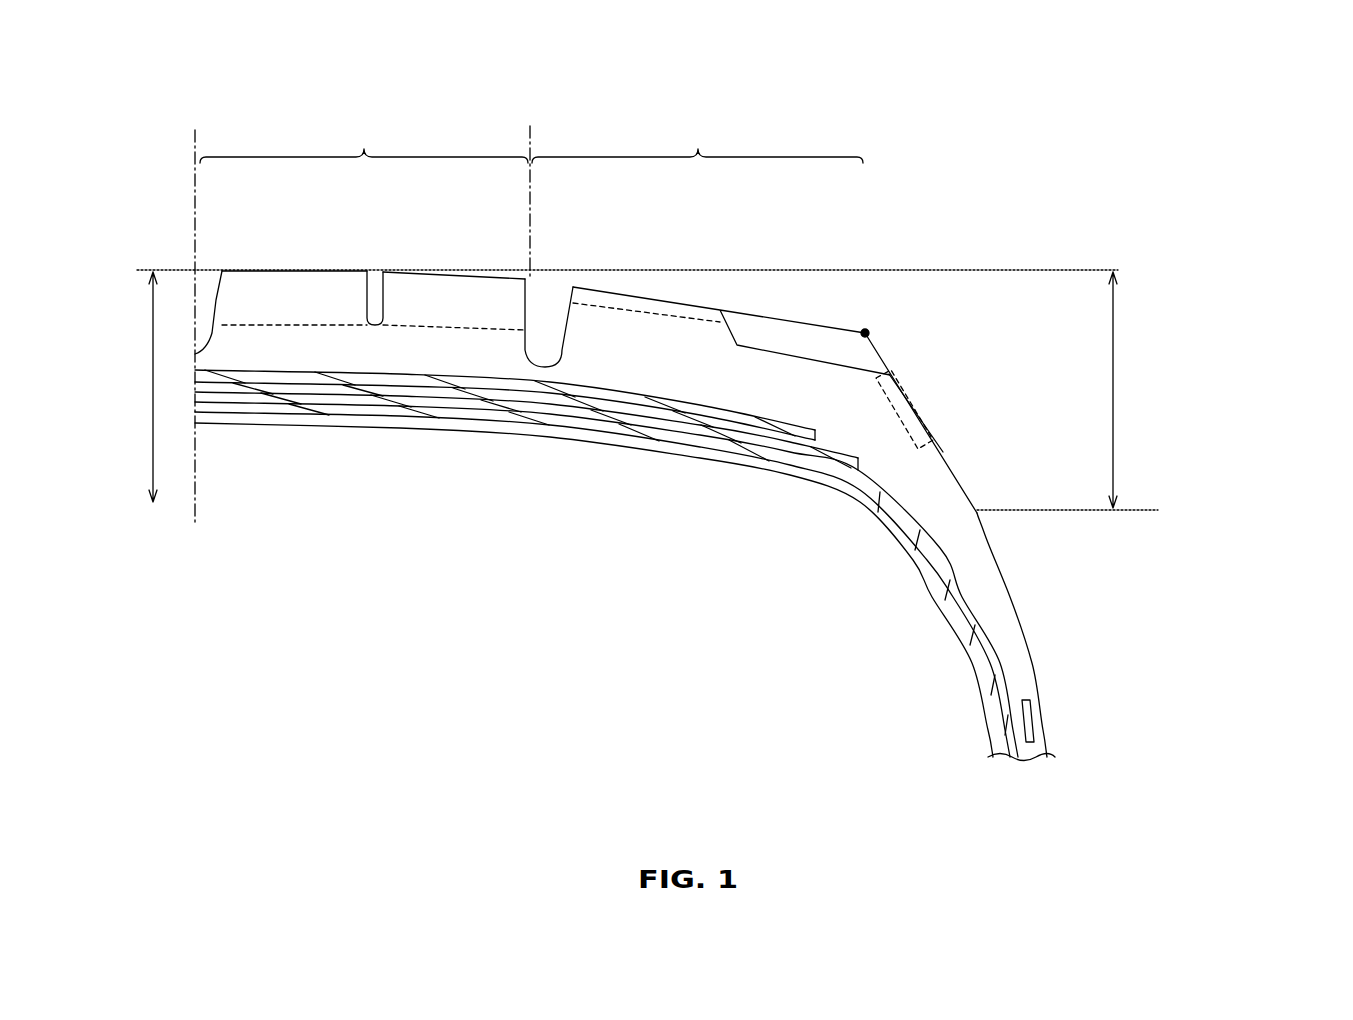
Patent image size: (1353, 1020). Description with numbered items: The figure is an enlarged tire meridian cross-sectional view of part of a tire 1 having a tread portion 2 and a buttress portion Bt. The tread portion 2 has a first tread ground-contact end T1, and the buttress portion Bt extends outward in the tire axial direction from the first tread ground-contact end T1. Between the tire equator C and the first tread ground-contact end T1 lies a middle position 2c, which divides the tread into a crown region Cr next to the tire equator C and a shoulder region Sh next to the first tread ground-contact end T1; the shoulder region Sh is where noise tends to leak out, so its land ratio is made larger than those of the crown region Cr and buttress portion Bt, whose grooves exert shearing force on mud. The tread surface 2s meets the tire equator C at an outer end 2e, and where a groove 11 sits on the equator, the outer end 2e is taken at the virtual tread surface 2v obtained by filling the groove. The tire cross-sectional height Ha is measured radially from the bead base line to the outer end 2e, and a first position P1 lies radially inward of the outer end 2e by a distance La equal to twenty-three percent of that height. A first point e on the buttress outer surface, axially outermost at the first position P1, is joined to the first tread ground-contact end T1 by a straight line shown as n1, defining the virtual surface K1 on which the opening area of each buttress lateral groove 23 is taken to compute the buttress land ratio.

The tire 1 is at (1041, 140).
The tread portion 2 is at (974, 157).
The groove 11 is at (724, 255).
The buttress lateral groove 23 is at (933, 398).
The virtual tread surface 2v is at (216, 300).
The tread surface 2s is at (475, 270).
The middle position 2c is at (533, 140).
The outer end 2e is at (193, 268).
The first tread ground-contact end T1 is at (870, 330).
The normal line n1 is at (990, 413).
The virtual surface K1 is at (943, 452).
The first point e is at (977, 512).
The first position P1 is at (1137, 508).
The buttress portion Bt is at (1200, 403).
The distance La is at (1131, 390).
The tire cross-sectional height Ha is at (153, 403).
The tire equator C is at (195, 309).
The crown region Cr is at (364, 137).
The shoulder region Sh is at (697, 138).